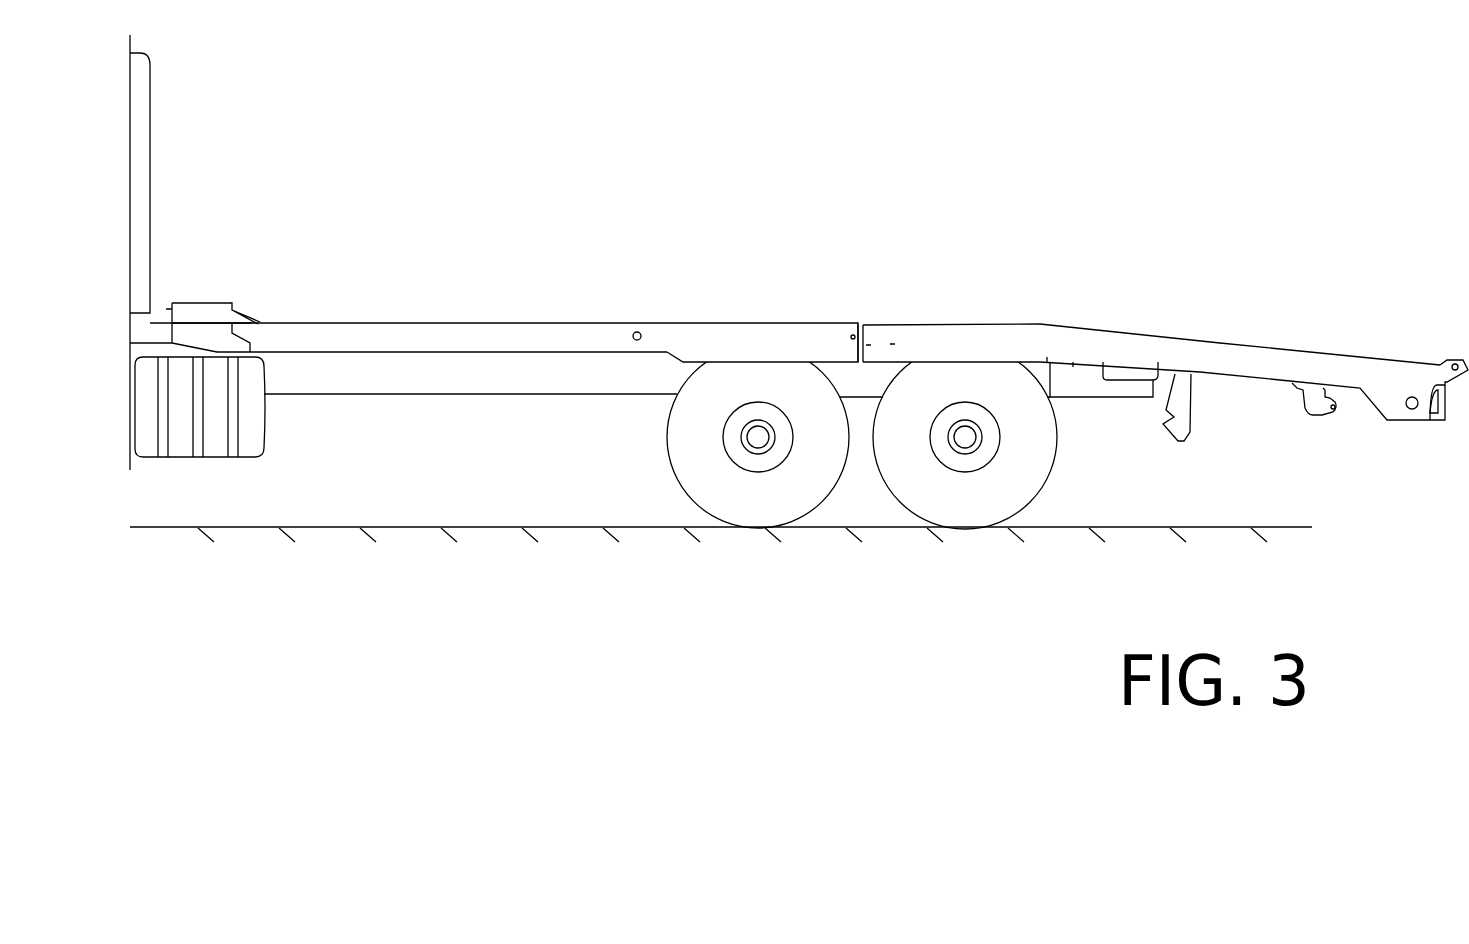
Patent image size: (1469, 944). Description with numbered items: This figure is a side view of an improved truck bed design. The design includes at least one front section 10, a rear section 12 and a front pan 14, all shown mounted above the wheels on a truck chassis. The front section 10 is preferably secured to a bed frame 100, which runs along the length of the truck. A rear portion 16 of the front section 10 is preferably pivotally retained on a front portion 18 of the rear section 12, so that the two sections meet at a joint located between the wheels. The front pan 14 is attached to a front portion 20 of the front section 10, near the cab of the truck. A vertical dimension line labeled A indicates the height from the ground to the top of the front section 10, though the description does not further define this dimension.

The front section 10 is at (660, 310).
The rear section 12 is at (1135, 320).
The front pan 14 is at (208, 278).
The rear portion 16 is at (842, 365).
The front portion 18 is at (887, 365).
The front portion 20 is at (402, 352).
The bed frame 100 is at (517, 370).
The frame height dimension A is at (362, 323).